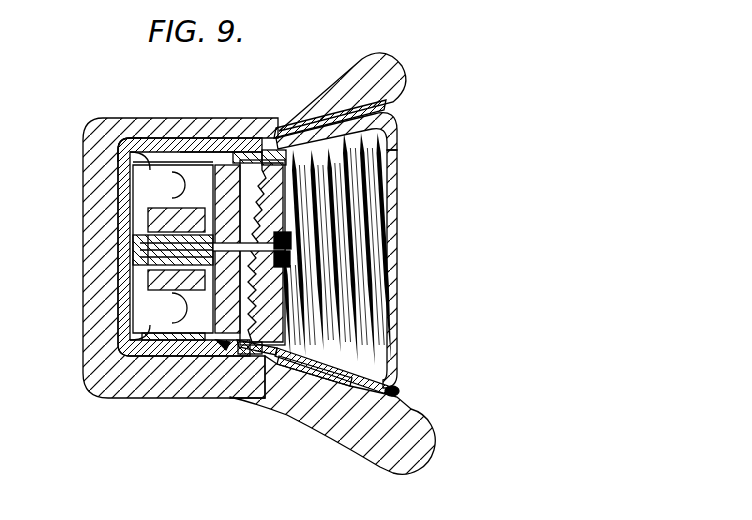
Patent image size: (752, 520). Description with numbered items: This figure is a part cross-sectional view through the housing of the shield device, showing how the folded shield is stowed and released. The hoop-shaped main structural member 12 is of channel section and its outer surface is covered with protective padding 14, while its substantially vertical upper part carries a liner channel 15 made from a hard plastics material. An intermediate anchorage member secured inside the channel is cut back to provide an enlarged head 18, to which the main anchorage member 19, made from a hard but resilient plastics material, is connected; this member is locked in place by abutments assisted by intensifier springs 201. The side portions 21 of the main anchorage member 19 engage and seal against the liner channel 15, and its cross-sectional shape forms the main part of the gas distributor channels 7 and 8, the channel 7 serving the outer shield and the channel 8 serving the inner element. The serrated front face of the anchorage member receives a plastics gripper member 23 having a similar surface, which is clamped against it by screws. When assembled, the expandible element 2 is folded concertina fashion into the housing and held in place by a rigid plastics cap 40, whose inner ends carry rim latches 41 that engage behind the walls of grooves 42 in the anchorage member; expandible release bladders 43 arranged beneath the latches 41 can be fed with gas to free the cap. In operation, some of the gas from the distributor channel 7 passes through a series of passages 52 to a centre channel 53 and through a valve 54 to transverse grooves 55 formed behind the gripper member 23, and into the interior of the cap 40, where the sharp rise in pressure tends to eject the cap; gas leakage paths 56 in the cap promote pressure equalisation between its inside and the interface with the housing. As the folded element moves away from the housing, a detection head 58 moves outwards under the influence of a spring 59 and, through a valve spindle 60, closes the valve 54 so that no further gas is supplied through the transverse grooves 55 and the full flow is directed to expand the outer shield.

The expandible element 2 is at (388, 110).
The gas distributor channel 7 is at (143, 200).
The gas distributor channel 8 is at (158, 305).
The main structural member 12 is at (399, 392).
The protective padding 14 is at (386, 66).
The liner channel 15 is at (118, 152).
The enlarged head 18 is at (133, 262).
The main anchorage member 19 is at (218, 153).
The side portions 21 is at (150, 166).
The gripper member 23 is at (280, 194).
The cap 40 is at (390, 156).
The rim latches 41 is at (250, 356).
The grooves 42 is at (266, 158).
The expandible release bladders 43 is at (252, 152).
The passages 52 is at (212, 224).
The centre channel 53 is at (203, 333).
The valve 54 is at (180, 212).
The transverse grooves 55 is at (272, 358).
The gas leakage paths 56 is at (280, 135).
The detection head 58 is at (292, 241).
The spring 59 is at (291, 273).
The valve spindle 60 is at (240, 224).
The intensifier springs 201 is at (120, 188).